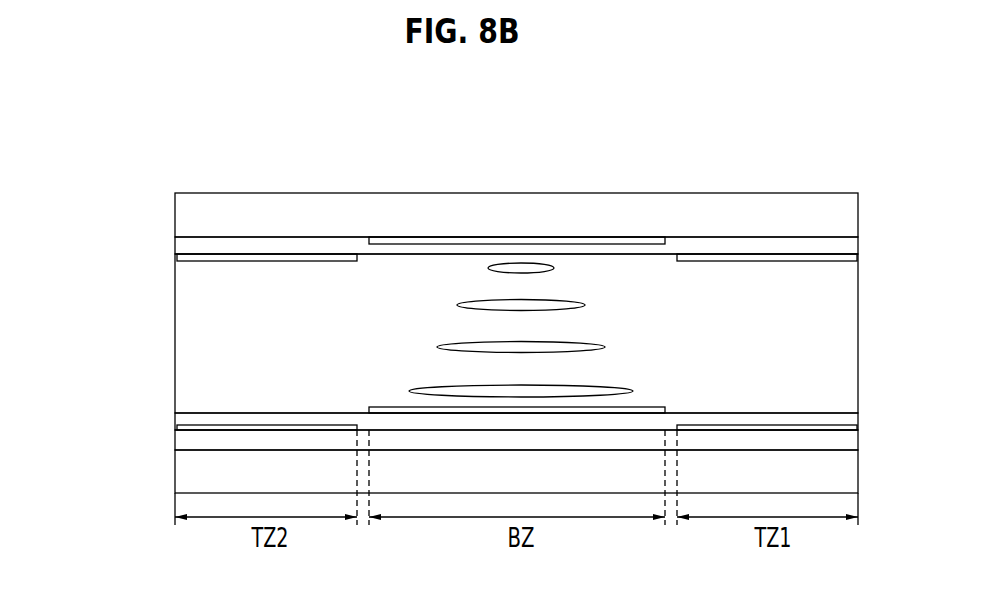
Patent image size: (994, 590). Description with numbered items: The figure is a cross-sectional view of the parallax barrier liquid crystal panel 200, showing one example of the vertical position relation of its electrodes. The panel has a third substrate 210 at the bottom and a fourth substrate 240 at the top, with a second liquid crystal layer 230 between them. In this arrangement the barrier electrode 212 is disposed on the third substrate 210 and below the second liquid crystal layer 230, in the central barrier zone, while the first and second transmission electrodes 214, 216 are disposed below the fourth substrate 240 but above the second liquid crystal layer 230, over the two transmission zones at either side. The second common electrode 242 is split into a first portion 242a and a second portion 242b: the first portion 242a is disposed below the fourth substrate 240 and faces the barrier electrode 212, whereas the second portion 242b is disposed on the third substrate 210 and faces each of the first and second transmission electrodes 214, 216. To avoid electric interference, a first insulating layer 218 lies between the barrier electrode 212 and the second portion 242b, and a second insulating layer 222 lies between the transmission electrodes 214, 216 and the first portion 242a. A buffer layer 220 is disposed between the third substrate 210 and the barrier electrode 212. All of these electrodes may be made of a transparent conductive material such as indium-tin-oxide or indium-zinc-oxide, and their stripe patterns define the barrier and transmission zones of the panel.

The parallax barrier liquid crystal panel 200 is at (729, 159).
The third substrate 210 is at (187, 469).
The barrier electrode 212 is at (654, 407).
The first transmission electrode 214 is at (768, 262).
The second transmission electrode 216 is at (270, 261).
The first insulating layer 218 is at (180, 422).
The buffer layer 220 is at (178, 438).
The second insulating layer 222 is at (177, 243).
The second liquid crystal layer 230 is at (180, 325).
The fourth substrate 240 is at (187, 215).
The second common electrode 242 is at (367, 333).
The first portion 242a is at (383, 244).
The second portion 242b is at (270, 424).